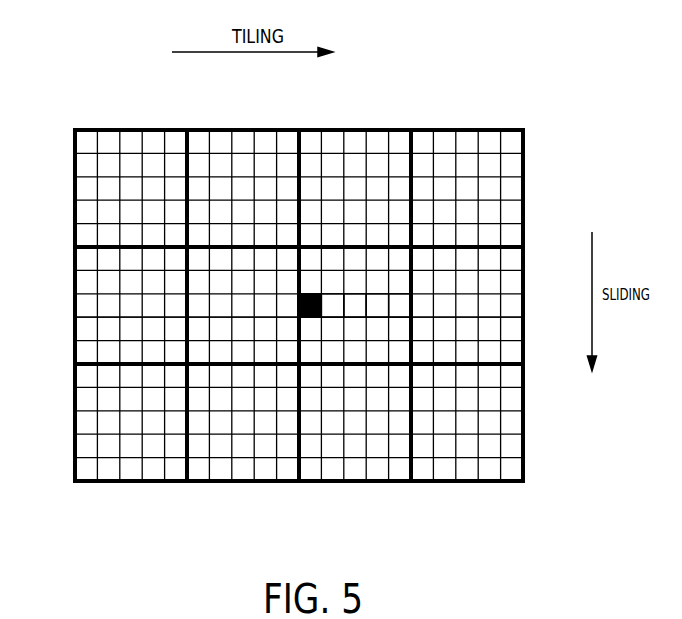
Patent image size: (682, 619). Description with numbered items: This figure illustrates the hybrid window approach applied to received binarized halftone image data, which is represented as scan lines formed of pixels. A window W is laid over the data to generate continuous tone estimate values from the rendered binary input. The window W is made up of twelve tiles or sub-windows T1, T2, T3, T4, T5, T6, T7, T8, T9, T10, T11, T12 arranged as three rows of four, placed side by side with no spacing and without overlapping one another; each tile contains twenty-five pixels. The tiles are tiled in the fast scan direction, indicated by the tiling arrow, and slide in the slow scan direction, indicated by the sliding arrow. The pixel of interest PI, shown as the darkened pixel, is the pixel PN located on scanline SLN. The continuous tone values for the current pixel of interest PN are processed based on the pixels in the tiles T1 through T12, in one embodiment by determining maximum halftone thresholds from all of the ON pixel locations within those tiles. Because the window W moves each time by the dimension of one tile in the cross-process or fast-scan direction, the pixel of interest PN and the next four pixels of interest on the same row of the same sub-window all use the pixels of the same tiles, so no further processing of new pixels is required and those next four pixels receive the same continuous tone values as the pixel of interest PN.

The tile or sub-window T1 is at (105, 192).
The tile or sub-window T2 is at (219, 162).
The tile or sub-window T3 is at (347, 157).
The tile or sub-window T4 is at (490, 183).
The tile or sub-window T5 is at (88, 307).
The tile or sub-window T6 is at (222, 330).
The tile or sub-window T7 is at (352, 350).
The tile or sub-window T8 is at (492, 327).
The tile or sub-window T9 is at (88, 468).
The tile or sub-window T10 is at (270, 466).
The tile or sub-window T11 is at (362, 462).
The tile or sub-window T12 is at (490, 468).
The window W is at (490, 127).
The pixel of interest PI is at (318, 295).
The pixel of interest PN is at (308, 305).
The scanline SLN is at (110, 308).